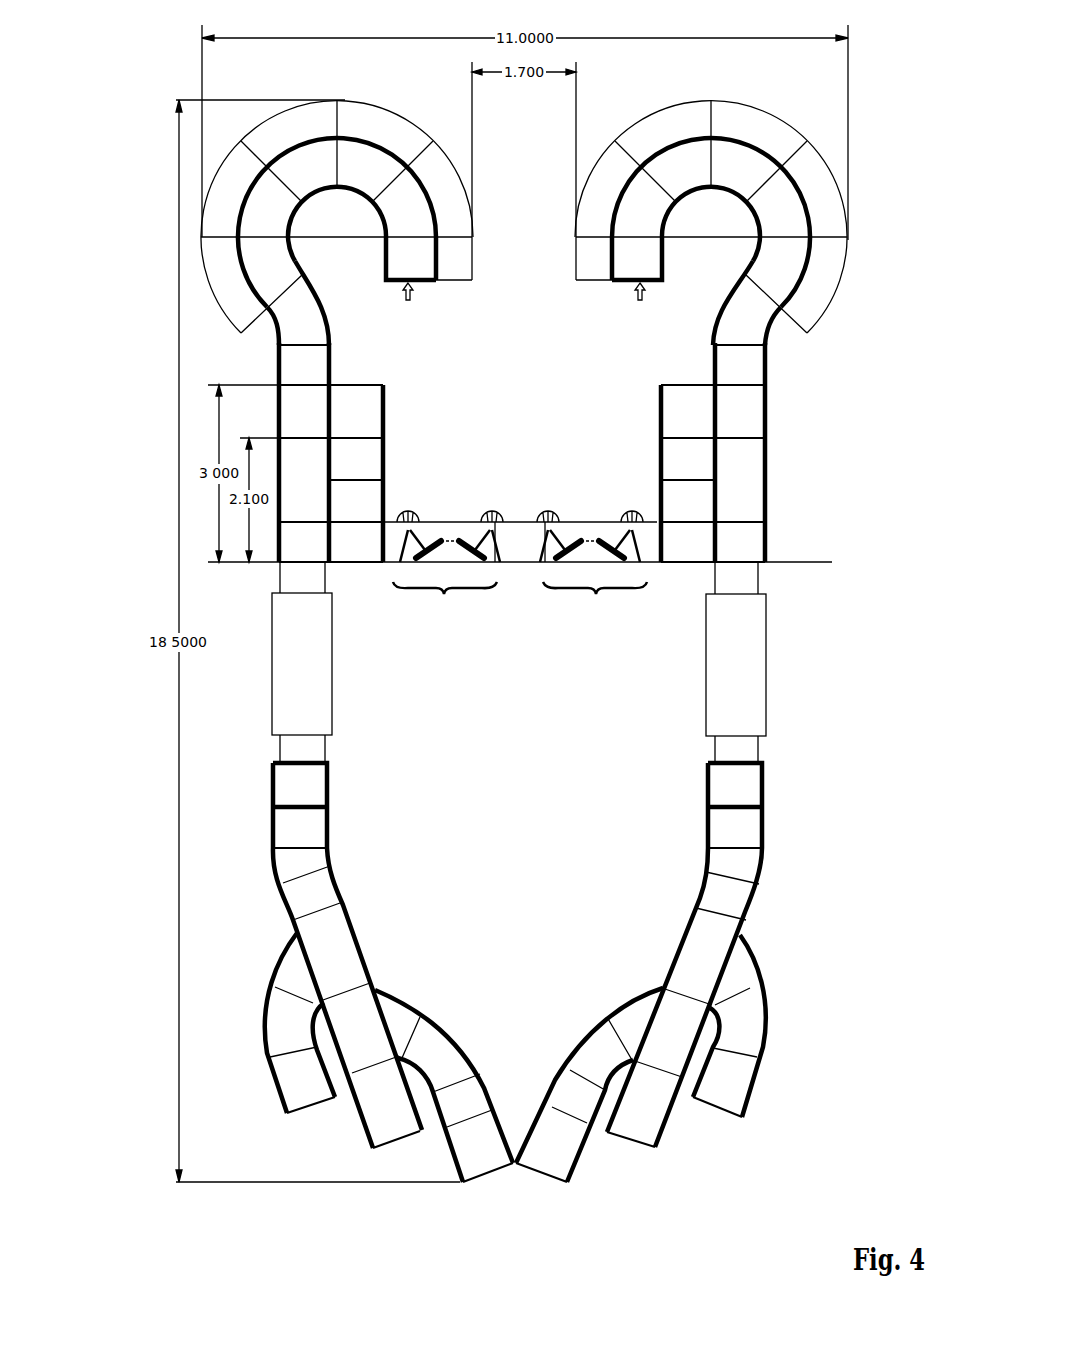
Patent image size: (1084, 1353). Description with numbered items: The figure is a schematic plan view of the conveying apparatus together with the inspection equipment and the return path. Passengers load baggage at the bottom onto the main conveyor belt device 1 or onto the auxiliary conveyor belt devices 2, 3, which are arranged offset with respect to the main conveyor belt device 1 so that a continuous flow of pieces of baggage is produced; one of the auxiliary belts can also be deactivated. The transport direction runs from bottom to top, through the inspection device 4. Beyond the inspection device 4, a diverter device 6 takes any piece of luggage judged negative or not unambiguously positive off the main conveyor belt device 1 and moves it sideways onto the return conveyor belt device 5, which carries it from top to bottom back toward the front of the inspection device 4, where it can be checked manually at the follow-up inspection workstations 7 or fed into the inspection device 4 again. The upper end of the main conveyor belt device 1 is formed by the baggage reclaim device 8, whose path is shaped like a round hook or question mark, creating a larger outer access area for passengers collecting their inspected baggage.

The main conveyor belt device 1 is at (332, 935).
The auxiliary conveyor belt device 2 is at (277, 1020).
The auxiliary conveyor belt device 3 is at (433, 1048).
The inspection device 4 is at (317, 692).
The return conveyor belt device 5 is at (375, 448).
The diverter device 6 is at (290, 411).
The follow-up inspection workstation 7 is at (520, 579).
The baggage reclaim device 8 is at (250, 226).